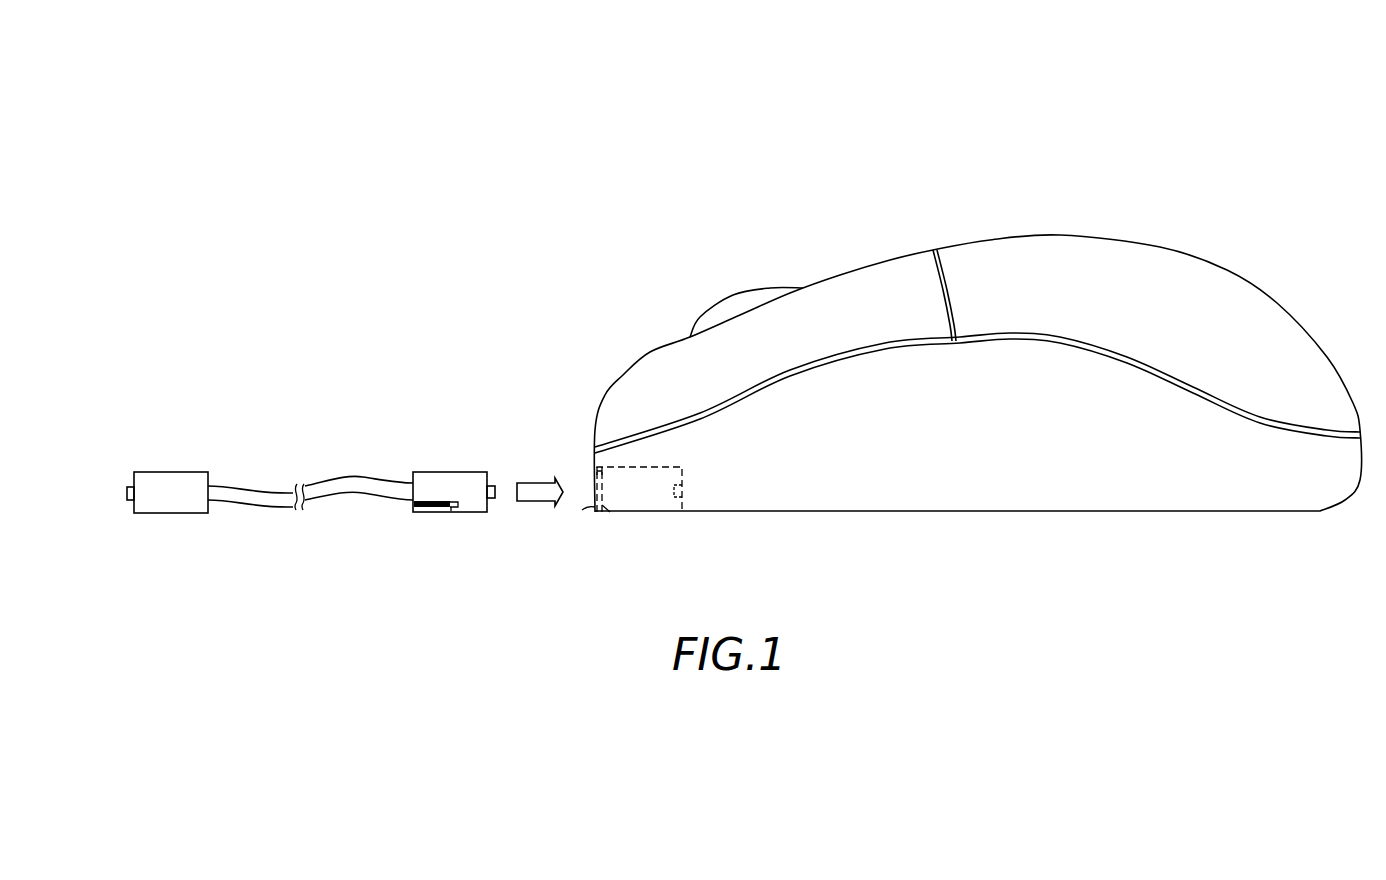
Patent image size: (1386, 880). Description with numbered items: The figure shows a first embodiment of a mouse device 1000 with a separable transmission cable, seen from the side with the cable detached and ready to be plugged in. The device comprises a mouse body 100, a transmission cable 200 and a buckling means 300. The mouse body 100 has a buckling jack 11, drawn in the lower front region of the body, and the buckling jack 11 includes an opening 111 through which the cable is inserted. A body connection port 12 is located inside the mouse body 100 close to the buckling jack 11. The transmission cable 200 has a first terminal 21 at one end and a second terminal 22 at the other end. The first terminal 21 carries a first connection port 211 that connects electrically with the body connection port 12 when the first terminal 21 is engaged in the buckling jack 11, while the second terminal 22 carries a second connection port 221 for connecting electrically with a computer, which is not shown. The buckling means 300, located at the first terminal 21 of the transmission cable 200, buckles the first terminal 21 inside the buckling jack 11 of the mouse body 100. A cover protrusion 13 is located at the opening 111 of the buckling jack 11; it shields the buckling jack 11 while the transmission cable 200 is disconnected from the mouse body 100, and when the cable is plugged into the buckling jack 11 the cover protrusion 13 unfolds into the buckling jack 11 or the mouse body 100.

The mouse device 1000 is at (1158, 133).
The mouse body 100 is at (1013, 244).
The buckling jack 11 is at (640, 505).
The body connection port 12 is at (684, 489).
The cover protrusion 13 is at (610, 513).
The opening 111 is at (582, 510).
The first terminal 21 is at (445, 480).
The first connection port 211 is at (496, 484).
The buckling means 300 is at (428, 513).
The second terminal 22 is at (165, 482).
The second connection port 221 is at (129, 501).
The transmission cable 200 is at (338, 485).